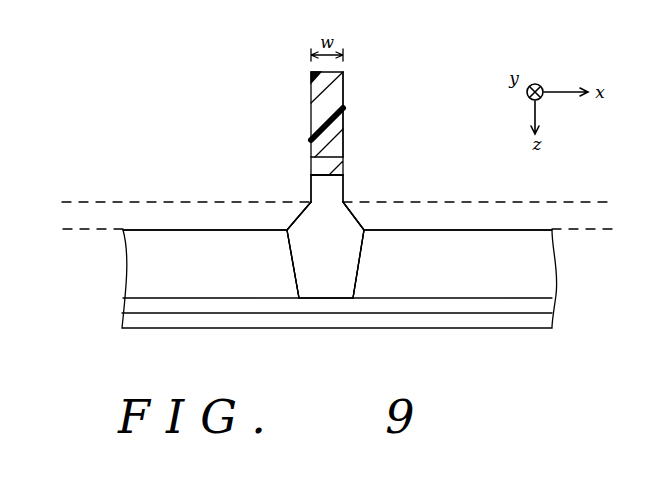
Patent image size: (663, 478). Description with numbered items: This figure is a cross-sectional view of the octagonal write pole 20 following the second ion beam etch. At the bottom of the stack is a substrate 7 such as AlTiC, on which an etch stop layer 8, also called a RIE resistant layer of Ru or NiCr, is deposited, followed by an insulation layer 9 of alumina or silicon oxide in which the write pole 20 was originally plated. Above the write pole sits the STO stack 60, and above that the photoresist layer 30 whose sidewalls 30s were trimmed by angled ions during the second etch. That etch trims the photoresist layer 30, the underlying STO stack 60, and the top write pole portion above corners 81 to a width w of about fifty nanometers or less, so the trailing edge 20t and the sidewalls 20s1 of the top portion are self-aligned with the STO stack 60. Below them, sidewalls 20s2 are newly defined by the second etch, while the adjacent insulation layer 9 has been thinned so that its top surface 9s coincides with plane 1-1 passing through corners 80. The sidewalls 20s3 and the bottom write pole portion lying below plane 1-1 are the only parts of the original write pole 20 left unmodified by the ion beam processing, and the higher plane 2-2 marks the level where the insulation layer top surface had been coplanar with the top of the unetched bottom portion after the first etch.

The plane 1 is at (341, 230).
The plane 2 is at (336, 203).
The substrate 7 is at (542, 324).
The etch stop layer 8 is at (542, 300).
The insulation layer 9 is at (138, 277).
The top surface 9s is at (158, 229).
The write pole 20 is at (325, 282).
The trailing edge 20t is at (344, 161).
The sidewalls 20s1 is at (311, 177).
The sidewalls 20s2 is at (296, 221).
The sidewalls 20s3 is at (293, 276).
The photoresist layer 30 is at (311, 114).
The sidewalls 30s is at (343, 103).
The STO stack 60 is at (322, 166).
The corners 80 is at (287, 231).
The corners 81 is at (308, 200).